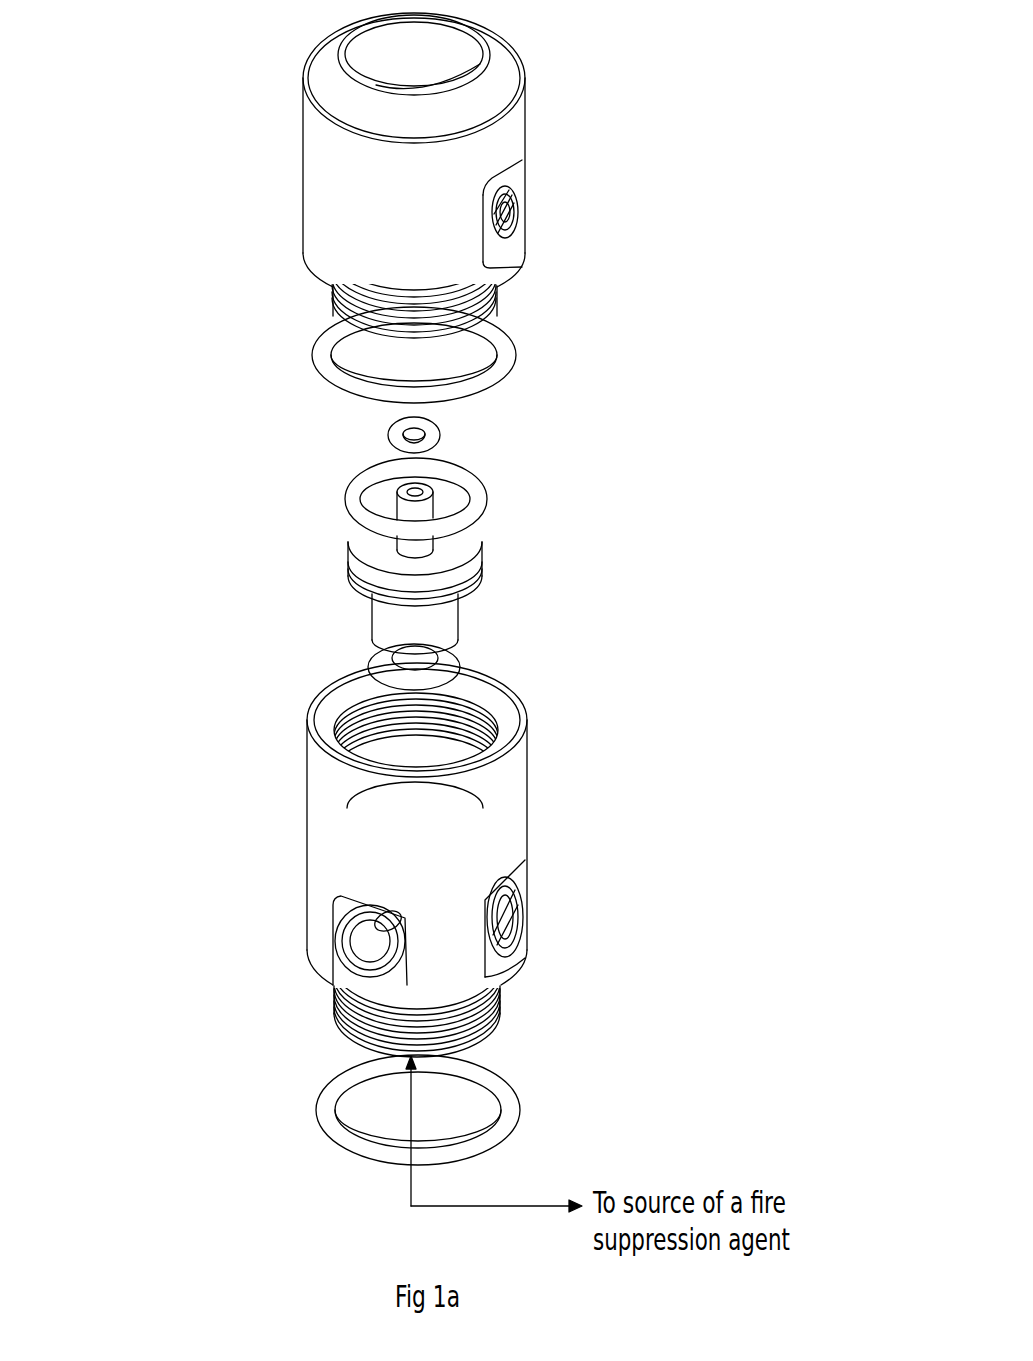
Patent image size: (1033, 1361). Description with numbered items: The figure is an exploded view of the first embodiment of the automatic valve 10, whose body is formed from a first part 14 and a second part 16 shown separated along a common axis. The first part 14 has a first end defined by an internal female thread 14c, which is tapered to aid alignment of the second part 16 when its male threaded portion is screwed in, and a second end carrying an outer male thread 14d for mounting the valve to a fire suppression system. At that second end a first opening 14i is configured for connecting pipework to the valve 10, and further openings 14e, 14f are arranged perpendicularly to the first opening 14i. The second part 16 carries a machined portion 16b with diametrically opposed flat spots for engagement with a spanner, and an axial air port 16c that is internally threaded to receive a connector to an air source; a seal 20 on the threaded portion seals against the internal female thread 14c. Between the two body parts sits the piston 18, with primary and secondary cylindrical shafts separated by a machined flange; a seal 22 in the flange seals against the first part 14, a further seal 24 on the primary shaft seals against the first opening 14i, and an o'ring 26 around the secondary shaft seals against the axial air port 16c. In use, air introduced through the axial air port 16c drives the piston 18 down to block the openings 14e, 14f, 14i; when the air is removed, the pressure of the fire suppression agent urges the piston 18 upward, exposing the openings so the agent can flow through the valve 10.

The automatic valve 10 is at (280, 517).
The first part 14 is at (497, 821).
The internal female thread 14c is at (352, 700).
The outer male thread 14d is at (340, 1032).
The valve opening 14e is at (523, 925).
The further opening 14f is at (335, 945).
The first opening 14i is at (418, 1057).
The second part 16 is at (467, 170).
The machined portion 16b is at (508, 256).
The axial air port 16c is at (432, 51).
The piston 18 is at (437, 621).
The seal 20 is at (500, 343).
The seal 22 is at (490, 503).
The further seal 24 is at (453, 673).
The o'ring 26 is at (392, 439).